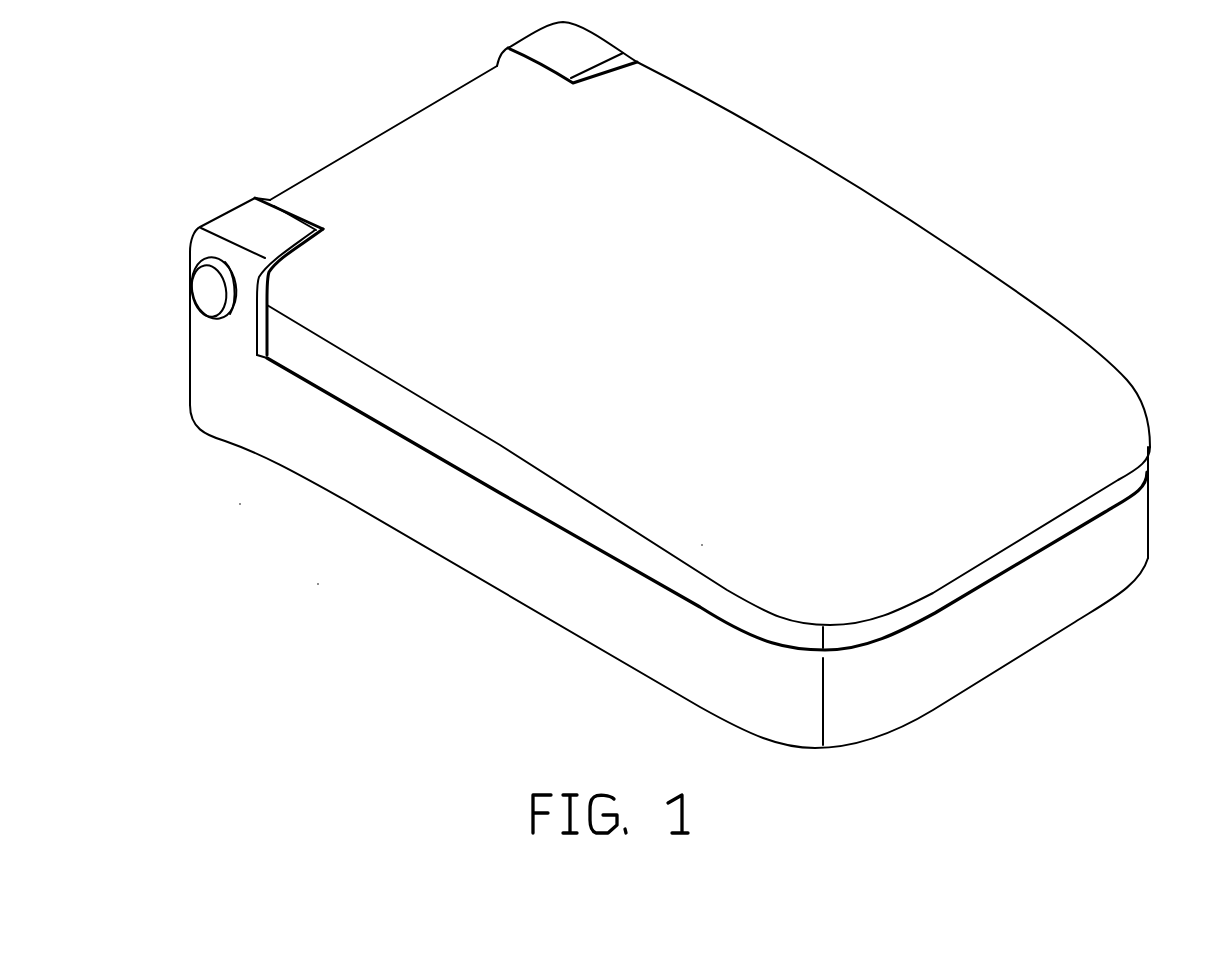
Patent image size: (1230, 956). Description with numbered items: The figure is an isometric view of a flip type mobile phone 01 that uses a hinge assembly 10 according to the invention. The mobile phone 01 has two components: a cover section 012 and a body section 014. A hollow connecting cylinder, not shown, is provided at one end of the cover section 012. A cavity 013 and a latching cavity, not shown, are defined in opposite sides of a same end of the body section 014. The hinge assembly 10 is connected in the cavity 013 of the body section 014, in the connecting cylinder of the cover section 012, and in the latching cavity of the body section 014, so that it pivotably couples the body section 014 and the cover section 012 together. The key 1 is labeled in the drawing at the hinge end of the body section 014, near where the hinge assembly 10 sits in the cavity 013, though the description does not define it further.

The flip type mobile phone 01 is at (648, 385).
The cover section 012 is at (1022, 368).
The cavity 013 is at (241, 300).
The body section 014 is at (1033, 610).
The key 1 is at (213, 258).
The hinge assembly 10 is at (212, 288).